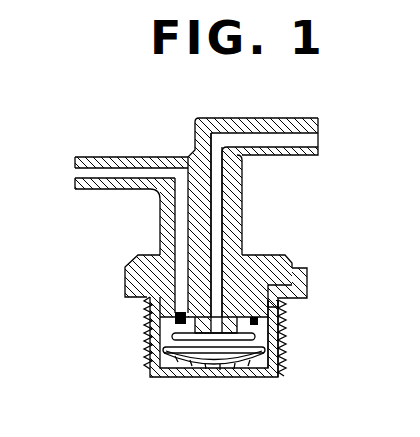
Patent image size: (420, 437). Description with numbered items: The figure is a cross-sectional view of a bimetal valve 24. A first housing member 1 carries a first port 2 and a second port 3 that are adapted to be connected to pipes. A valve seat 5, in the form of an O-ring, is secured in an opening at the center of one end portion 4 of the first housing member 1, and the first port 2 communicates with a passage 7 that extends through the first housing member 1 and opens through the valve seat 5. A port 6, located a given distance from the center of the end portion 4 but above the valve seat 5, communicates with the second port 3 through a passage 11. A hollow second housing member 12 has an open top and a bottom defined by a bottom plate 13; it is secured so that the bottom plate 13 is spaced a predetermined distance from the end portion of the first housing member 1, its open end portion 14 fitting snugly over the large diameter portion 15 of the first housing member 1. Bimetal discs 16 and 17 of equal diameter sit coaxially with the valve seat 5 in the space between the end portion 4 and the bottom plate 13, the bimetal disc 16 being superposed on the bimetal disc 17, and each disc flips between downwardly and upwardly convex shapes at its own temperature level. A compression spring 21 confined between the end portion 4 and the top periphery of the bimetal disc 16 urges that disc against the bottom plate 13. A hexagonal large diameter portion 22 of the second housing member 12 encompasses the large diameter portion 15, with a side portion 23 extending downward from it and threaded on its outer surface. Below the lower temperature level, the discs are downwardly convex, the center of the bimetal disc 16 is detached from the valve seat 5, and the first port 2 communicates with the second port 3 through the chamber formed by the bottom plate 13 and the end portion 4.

The first housing member 1 is at (250, 207).
The first port 2 is at (314, 140).
The second port 3 is at (75, 175).
The end portion 4 is at (278, 313).
The valve seat 5 is at (238, 372).
The port 6 is at (182, 311).
The passage 7 is at (218, 181).
The passage 11 is at (180, 221).
The second housing member 12 is at (283, 376).
The bottom plate 13 is at (235, 338).
The open end portion 14 is at (262, 256).
The large diameter portion 15 is at (277, 273).
The bimetal disc 16 is at (166, 350).
The bimetal disc 17 is at (160, 362).
The compression spring 21 is at (262, 338).
The large diameter portion 22 is at (122, 278).
The side portion 23 is at (287, 336).
The bimetal valve 24 is at (360, 223).